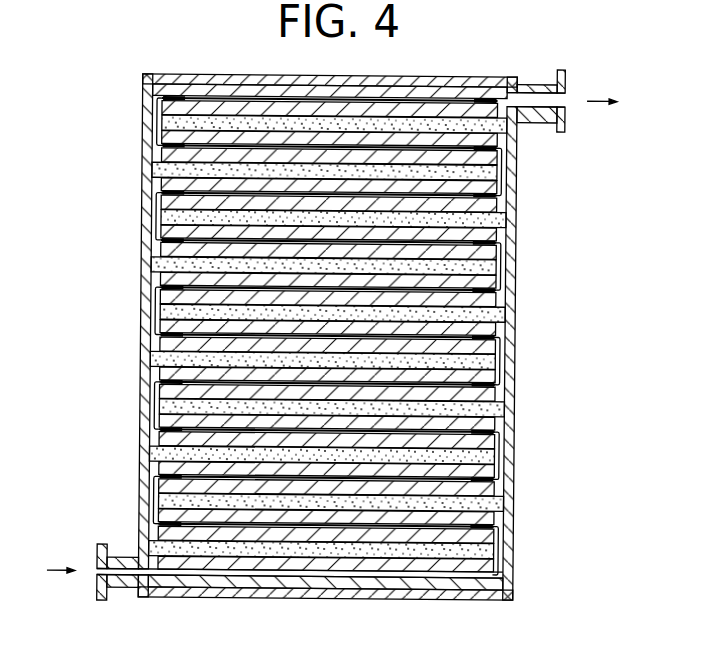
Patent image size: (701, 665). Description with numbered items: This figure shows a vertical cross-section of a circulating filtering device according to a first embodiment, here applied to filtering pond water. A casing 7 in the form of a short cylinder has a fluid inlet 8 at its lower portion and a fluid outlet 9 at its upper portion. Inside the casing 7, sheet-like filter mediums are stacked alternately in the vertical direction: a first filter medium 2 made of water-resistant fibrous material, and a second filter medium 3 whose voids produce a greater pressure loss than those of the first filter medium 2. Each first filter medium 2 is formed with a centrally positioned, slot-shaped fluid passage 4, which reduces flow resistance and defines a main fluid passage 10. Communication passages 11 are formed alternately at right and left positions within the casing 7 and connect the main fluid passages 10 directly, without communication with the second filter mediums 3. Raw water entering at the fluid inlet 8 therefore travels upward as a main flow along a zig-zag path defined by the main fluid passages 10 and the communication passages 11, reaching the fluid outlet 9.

The first filter medium 2 is at (450, 587).
The second filter medium 3 is at (425, 551).
The fluid passage 4 is at (344, 581).
The casing 7 is at (224, 58).
The fluid inlet 8 is at (118, 590).
The fluid outlet 9 is at (536, 85).
The main fluid passage 10 is at (304, 524).
The communication passage 11 is at (155, 128).